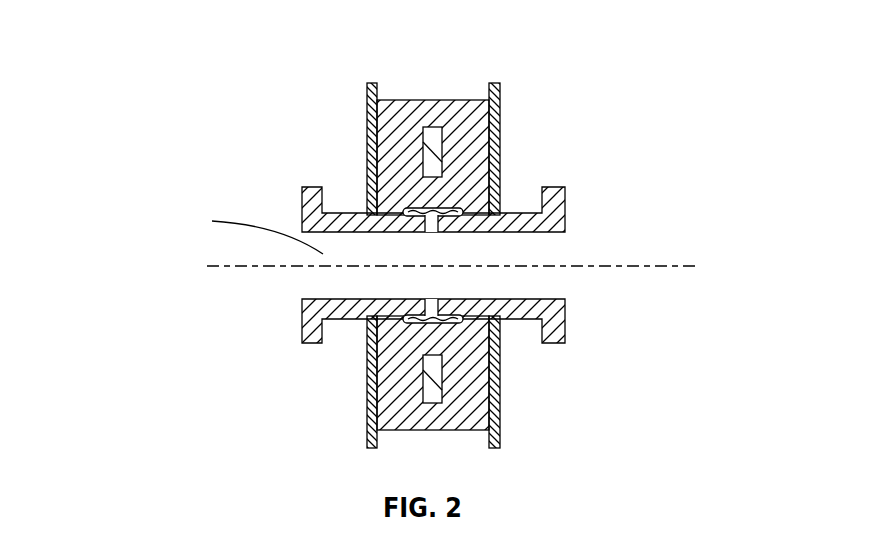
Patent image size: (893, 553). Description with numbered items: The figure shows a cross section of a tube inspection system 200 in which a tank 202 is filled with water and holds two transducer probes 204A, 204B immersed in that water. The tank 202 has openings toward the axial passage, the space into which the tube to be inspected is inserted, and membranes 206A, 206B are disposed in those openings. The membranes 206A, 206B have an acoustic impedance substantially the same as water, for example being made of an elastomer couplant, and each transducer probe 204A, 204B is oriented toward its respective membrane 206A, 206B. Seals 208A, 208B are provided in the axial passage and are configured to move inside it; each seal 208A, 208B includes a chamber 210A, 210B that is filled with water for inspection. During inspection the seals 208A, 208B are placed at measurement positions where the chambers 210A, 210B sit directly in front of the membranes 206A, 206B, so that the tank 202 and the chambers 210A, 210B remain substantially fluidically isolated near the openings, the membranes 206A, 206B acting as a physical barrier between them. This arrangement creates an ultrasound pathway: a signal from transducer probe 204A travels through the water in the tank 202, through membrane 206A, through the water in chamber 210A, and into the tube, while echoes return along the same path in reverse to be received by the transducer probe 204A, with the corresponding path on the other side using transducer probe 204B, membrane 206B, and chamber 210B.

The tube inspection system 200 is at (697, 41).
The tank 202 is at (500, 119).
The transducer probe 204A is at (430, 150).
The transducer probe 204B is at (430, 378).
The membrane 206A is at (440, 211).
The membrane 206B is at (440, 322).
The seal 208A is at (565, 195).
The seal 208B is at (565, 325).
The chamber 210A is at (430, 215).
The chamber 210B is at (425, 318).